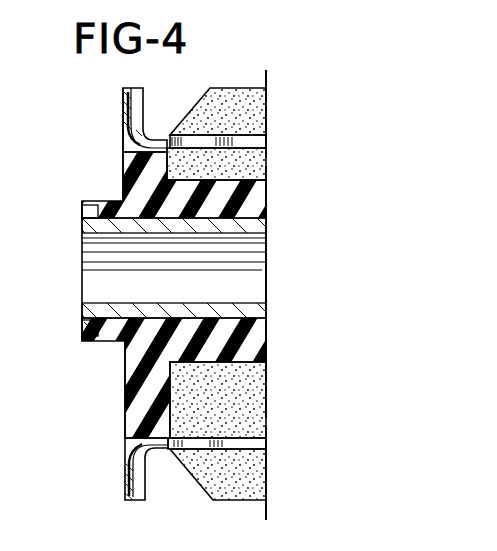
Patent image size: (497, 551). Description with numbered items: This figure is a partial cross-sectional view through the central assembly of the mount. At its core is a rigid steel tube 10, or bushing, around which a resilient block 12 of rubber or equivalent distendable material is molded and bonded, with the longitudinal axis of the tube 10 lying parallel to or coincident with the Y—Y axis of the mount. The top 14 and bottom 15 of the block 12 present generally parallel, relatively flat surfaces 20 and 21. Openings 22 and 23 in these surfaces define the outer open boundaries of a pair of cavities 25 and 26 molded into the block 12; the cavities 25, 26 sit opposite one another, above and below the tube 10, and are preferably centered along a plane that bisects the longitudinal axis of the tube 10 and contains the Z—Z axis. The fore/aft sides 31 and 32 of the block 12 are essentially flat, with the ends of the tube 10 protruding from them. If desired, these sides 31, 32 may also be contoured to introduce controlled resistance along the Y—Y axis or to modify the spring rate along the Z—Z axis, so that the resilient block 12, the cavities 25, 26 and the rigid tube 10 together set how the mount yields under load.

The tube 10 is at (82, 220).
The block 12 is at (256, 206).
The top 14 is at (123, 176).
The bottom 15 is at (150, 416).
The flat surface 20 is at (123, 157).
The flat surface 21 is at (128, 447).
The opening 22 is at (181, 139).
The opening 23 is at (180, 411).
The cavity 25 is at (250, 167).
The cavity 26 is at (257, 382).
The fore/aft side 31 is at (125, 353).
The fore/aft side 32 is at (123, 165).